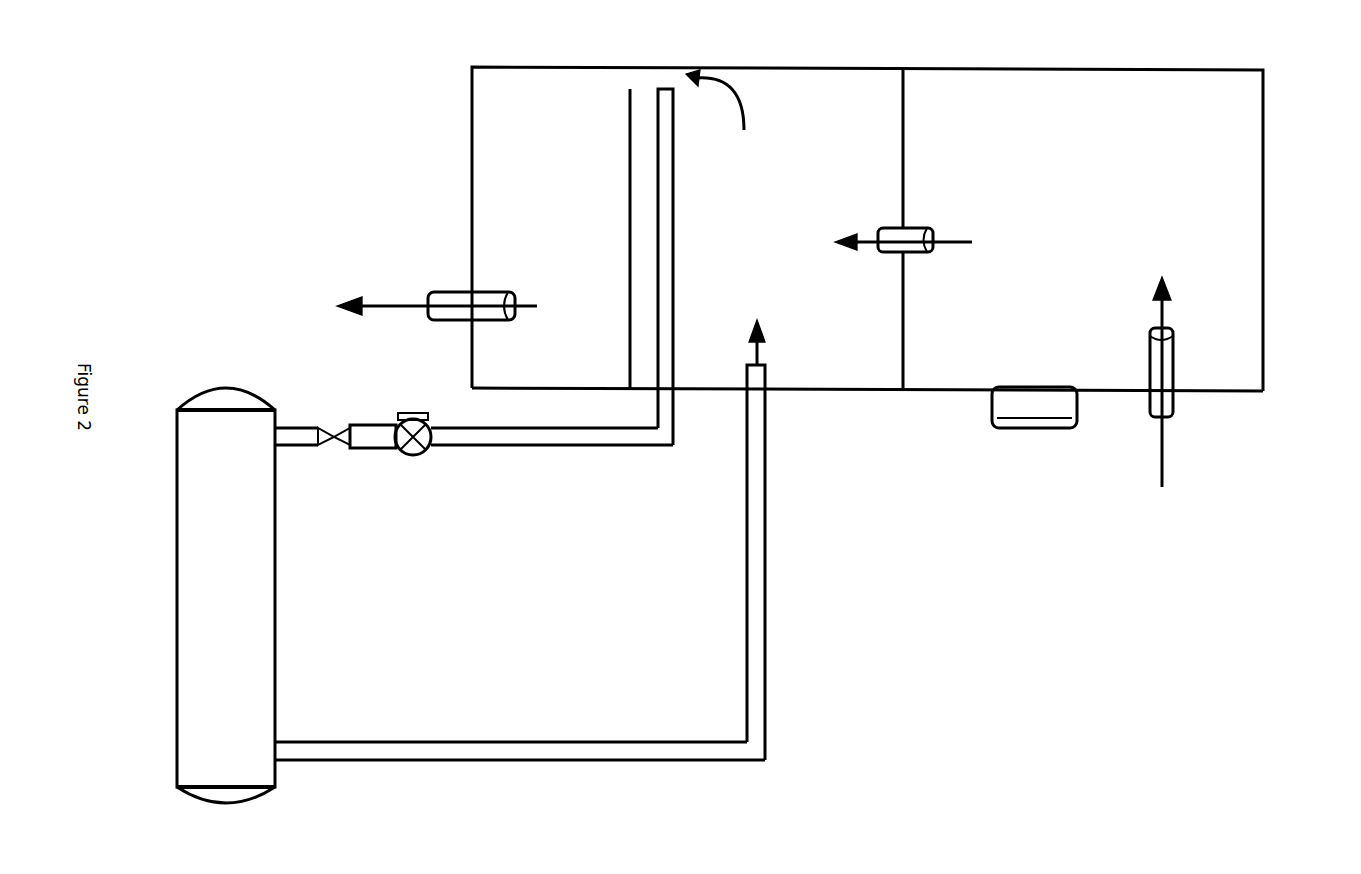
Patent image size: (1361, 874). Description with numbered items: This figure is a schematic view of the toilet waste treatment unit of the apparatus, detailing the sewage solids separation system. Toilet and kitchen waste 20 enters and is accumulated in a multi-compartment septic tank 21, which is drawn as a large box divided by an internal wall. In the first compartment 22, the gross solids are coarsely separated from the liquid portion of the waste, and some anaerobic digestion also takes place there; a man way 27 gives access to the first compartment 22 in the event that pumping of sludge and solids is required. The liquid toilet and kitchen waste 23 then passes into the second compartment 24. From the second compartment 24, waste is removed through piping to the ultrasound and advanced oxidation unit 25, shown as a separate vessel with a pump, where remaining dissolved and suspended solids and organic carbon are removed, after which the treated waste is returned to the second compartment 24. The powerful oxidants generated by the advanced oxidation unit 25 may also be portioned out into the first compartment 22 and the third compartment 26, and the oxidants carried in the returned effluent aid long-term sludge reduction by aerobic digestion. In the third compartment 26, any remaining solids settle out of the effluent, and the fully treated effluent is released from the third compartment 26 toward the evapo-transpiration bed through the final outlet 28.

The toilet and kitchen waste 20 is at (1132, 391).
The multi-compartment septic tank 21 is at (1276, 318).
The first compartment 22 is at (1202, 372).
The liquid toilet and kitchen waste 23 is at (897, 219).
The second compartment 24 is at (874, 230).
The ultrasound and advanced oxidation unit 25 is at (471, 595).
The third compartment 26 is at (657, 257).
The man way 27 is at (1007, 422).
The final outlet 28 is at (437, 284).